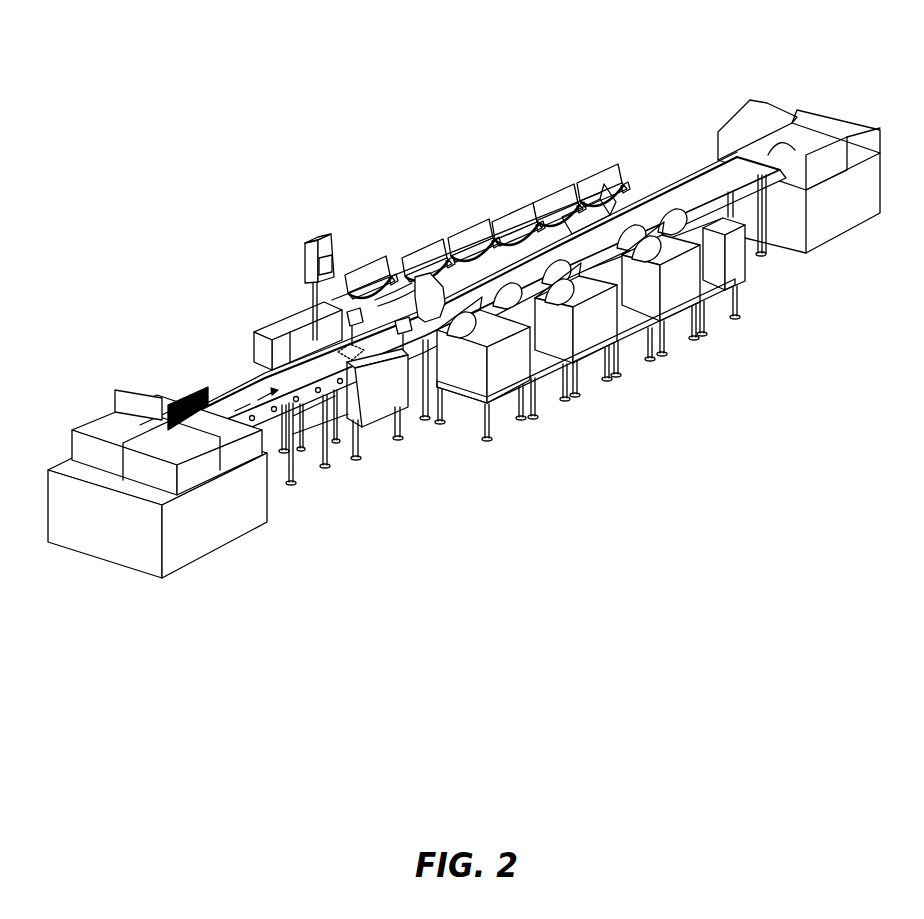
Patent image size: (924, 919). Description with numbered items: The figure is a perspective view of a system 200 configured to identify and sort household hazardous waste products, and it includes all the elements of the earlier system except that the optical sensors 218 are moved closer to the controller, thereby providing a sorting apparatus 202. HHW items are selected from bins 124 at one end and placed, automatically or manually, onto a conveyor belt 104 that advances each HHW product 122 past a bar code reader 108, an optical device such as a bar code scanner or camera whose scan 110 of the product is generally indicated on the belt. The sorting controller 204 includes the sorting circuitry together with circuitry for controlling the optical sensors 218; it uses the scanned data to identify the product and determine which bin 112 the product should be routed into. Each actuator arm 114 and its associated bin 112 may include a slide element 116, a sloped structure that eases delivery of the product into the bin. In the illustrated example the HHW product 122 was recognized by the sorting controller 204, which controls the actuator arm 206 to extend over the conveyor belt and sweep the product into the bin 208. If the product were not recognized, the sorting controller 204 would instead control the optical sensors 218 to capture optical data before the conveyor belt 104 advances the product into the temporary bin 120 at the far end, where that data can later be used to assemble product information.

The system 200 is at (82, 61).
The sorting apparatus 202 is at (246, 265).
The sorting controller 204 is at (305, 243).
The bar code reader 108 is at (313, 332).
The conveyor belt 104 is at (247, 392).
The bins 124 is at (98, 366).
The scan 110 is at (360, 418).
The HHW product 122 is at (413, 290).
The actuator arm 114 is at (425, 290).
The bin 112 is at (557, 190).
The actuator arm 206 is at (588, 247).
The slide element 116 is at (470, 332).
The optical sensors 218 is at (428, 420).
The bin 208 is at (637, 315).
The temporary bin 120 is at (700, 103).